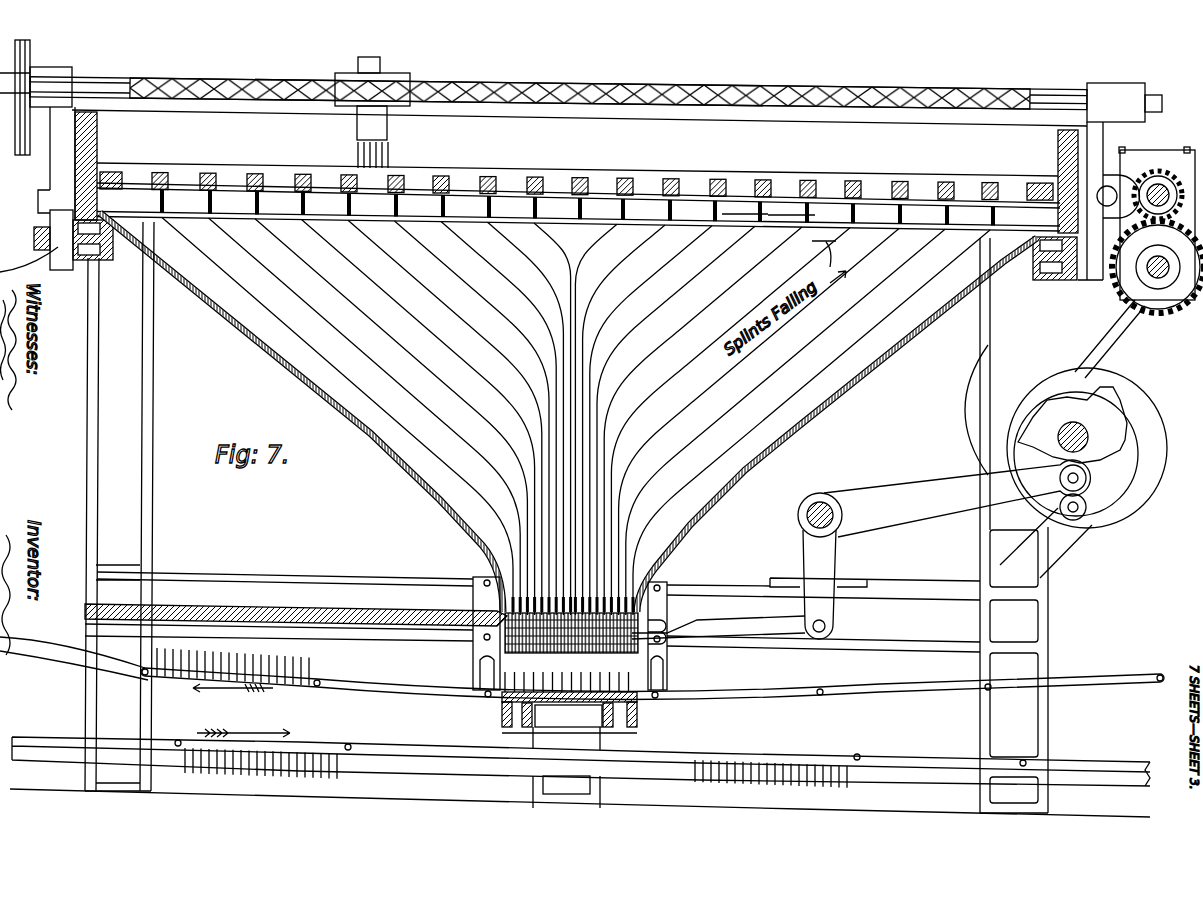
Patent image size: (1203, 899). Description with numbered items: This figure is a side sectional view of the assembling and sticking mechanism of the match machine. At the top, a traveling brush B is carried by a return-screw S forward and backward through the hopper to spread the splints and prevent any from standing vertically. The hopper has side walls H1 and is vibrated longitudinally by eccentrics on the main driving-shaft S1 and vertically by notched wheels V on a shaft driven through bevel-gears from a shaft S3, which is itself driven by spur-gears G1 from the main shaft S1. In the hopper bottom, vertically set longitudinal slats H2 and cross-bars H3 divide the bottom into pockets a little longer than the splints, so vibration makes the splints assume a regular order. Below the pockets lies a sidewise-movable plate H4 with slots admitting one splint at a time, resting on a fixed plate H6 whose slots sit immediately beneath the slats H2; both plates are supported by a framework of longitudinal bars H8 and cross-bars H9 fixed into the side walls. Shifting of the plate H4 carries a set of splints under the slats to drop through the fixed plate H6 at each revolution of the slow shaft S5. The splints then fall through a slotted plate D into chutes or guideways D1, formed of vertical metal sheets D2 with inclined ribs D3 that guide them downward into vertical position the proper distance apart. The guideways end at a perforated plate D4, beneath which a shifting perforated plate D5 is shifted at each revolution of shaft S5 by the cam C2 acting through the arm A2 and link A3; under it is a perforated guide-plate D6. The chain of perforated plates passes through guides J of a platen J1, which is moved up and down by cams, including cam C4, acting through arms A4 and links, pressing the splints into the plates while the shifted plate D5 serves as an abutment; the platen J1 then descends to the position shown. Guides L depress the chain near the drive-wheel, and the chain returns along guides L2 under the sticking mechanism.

The return-screw S is at (498, 87).
The traveling brush B is at (372, 112).
The notched wheels V is at (1082, 274).
The side walls H1 is at (579, 171).
The longitudinal slats H2 is at (527, 167).
The cross-bars H3 is at (537, 178).
The plate H4 is at (603, 192).
The plate H6 is at (649, 198).
The longitudinal bars H8 is at (791, 213).
The cross-bars H9 is at (760, 212).
The plate D is at (689, 237).
The chutes or guideways D1 is at (782, 419).
The vertical sheets of metal D2 is at (704, 359).
The inclined ribs D3 is at (342, 386).
The perforated plate D4 is at (507, 613).
The shifting perforated plate D5 is at (497, 637).
The perforated guide-plate D6 is at (507, 657).
The arm A2 is at (946, 549).
The link A3 is at (718, 627).
The arms A4 is at (778, 494).
The cam C2 is at (1110, 410).
The cam C4 is at (1143, 513).
The shaft S5 is at (1078, 450).
The main driving-shaft S1 is at (1158, 186).
The shaft S3 is at (1150, 272).
The spur-gears G1 is at (1163, 312).
The guides J is at (567, 675).
The platen J1 is at (505, 714).
The guides L is at (582, 668).
The guides L2 is at (581, 761).